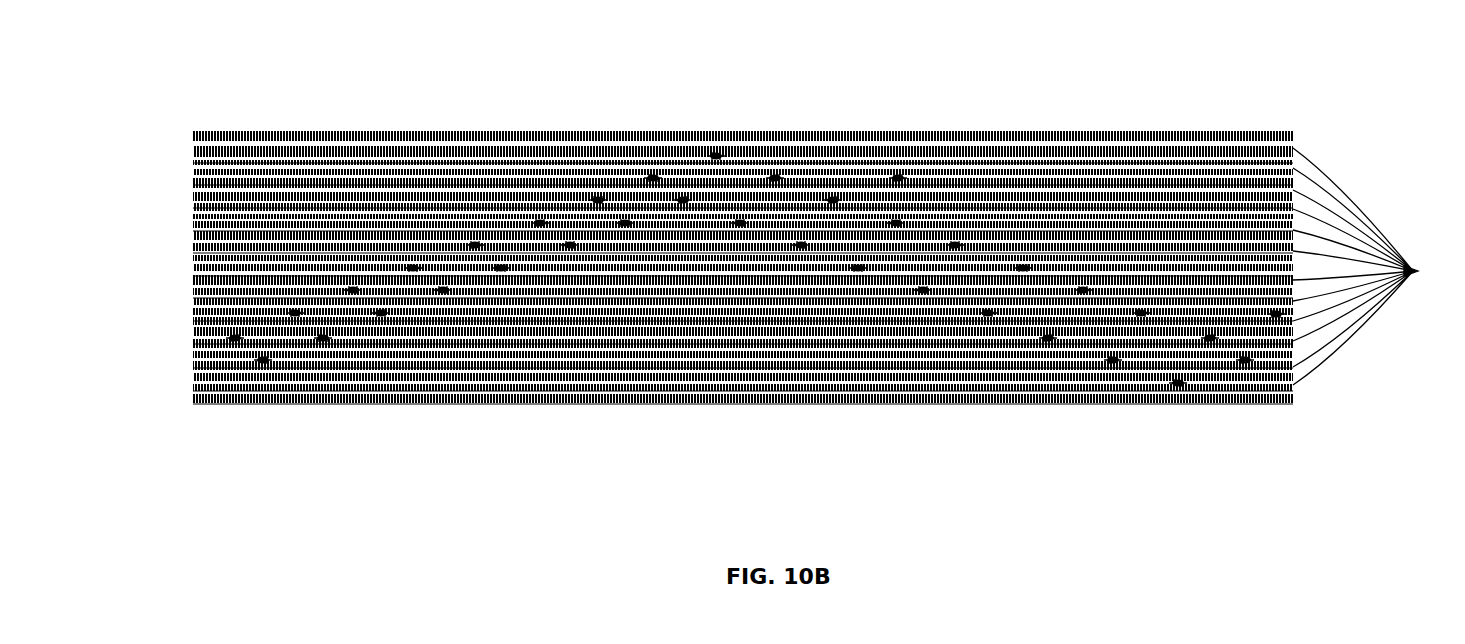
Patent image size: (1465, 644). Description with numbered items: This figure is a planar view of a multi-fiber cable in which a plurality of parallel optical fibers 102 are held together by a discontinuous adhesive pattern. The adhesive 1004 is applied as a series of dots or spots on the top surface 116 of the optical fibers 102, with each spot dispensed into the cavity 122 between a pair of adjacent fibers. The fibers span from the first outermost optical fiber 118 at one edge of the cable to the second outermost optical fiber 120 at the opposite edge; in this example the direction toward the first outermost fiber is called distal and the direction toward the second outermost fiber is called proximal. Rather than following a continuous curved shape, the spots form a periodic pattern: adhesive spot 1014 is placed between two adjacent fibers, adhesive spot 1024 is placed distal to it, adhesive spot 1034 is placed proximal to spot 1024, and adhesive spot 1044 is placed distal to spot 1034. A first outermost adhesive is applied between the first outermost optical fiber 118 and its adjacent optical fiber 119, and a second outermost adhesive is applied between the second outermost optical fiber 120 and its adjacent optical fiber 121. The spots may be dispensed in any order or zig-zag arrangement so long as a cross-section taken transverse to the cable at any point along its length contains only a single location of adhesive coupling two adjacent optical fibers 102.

The optical fibers 102 is at (1375, 266).
The top surface 116 is at (830, 156).
The first outermost optical fiber 118 is at (188, 383).
The adjacent optical fiber 119 is at (200, 355).
The second outermost optical fiber 120 is at (198, 135).
The adjacent optical fiber 121 is at (193, 160).
The cavity 122 is at (196, 143).
The adhesive 1004 is at (227, 330).
The adhesive spot 1014 is at (1268, 306).
The adhesive spot 1024 is at (1237, 352).
The adhesive spot 1034 is at (1202, 330).
The adhesive spot 1044 is at (1170, 375).